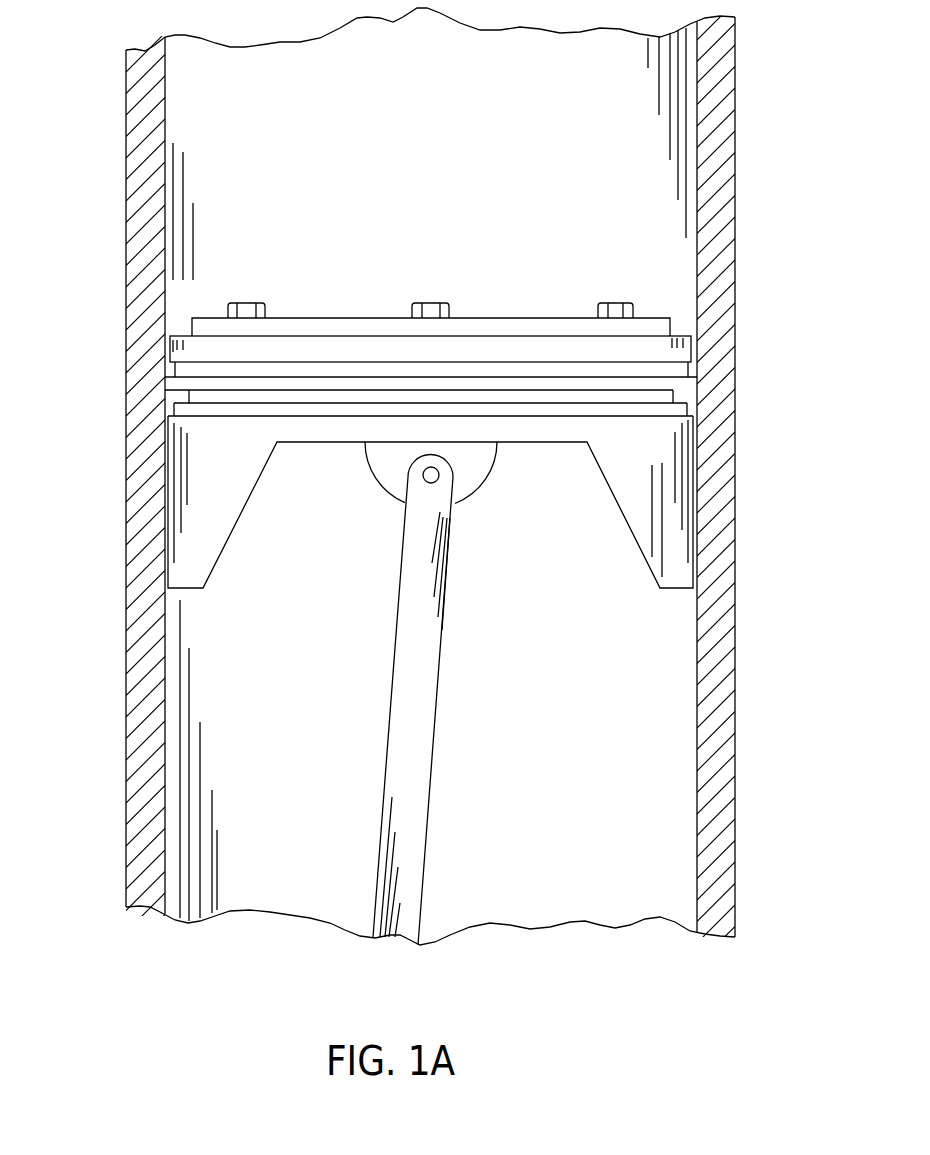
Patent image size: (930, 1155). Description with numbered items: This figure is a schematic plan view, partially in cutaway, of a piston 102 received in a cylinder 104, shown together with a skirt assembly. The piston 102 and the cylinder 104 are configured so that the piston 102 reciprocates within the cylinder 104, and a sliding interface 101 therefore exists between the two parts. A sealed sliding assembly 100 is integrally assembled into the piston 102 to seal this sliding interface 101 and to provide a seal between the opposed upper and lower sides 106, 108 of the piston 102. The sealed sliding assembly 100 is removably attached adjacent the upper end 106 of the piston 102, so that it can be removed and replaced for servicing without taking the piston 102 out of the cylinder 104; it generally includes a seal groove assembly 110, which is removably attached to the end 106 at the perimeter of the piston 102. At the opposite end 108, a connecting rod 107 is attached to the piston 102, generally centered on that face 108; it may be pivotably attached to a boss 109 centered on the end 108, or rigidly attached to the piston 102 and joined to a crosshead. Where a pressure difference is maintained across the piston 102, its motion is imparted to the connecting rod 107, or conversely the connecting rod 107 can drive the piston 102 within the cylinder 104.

The sealed sliding assembly 100 is at (163, 373).
The sliding interface 101 is at (693, 345).
The piston 102 is at (578, 300).
The cylinder 104 is at (720, 475).
The upper side (end) of piston 106 is at (220, 335).
The connecting rod 107 is at (418, 803).
The lower side (end) of piston 108 is at (562, 445).
The boss 109 is at (477, 472).
The seal groove assembly 110 is at (677, 376).